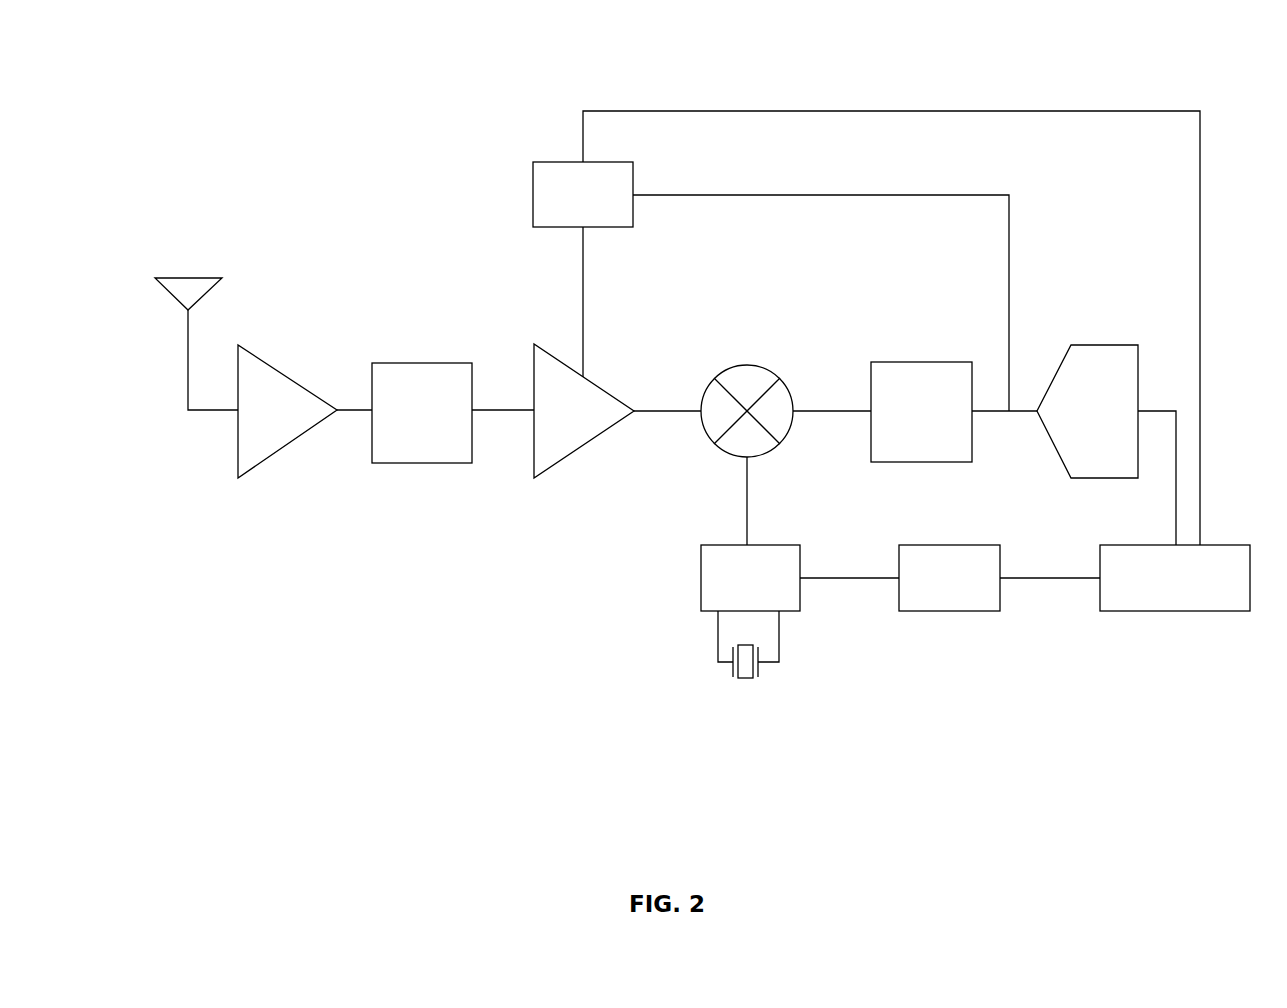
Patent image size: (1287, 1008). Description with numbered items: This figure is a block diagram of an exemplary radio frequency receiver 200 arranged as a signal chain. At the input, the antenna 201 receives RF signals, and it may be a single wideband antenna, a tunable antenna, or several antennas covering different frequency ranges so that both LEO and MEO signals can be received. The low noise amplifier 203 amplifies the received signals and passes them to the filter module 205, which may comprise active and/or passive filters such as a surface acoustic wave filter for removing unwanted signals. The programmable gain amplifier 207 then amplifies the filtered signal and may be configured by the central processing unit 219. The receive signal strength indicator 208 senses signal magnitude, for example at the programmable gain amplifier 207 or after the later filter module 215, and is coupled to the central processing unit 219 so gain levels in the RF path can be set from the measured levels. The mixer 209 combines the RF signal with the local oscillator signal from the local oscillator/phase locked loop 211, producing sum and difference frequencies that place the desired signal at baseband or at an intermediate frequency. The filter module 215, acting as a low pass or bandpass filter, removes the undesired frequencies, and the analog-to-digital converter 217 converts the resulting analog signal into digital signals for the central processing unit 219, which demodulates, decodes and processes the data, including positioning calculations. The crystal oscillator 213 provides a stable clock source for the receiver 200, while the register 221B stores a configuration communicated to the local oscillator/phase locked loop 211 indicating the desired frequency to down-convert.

The receiver 200 is at (240, 90).
The antenna 201 is at (168, 269).
The low noise amplifier 203 is at (246, 438).
The filter module 205 is at (402, 438).
The programmable gain amplifier 207 is at (547, 438).
The receive signal strength indicator 208 is at (563, 218).
The mixer 209 is at (727, 357).
The local oscillator/phase locked loop 211 is at (730, 603).
The crystal oscillator 213 is at (726, 727).
The filter module 215 is at (901, 438).
The analog-to-digital converter 217 is at (1077, 438).
The central processing unit 219 is at (1187, 588).
The register 221B is at (923, 603).